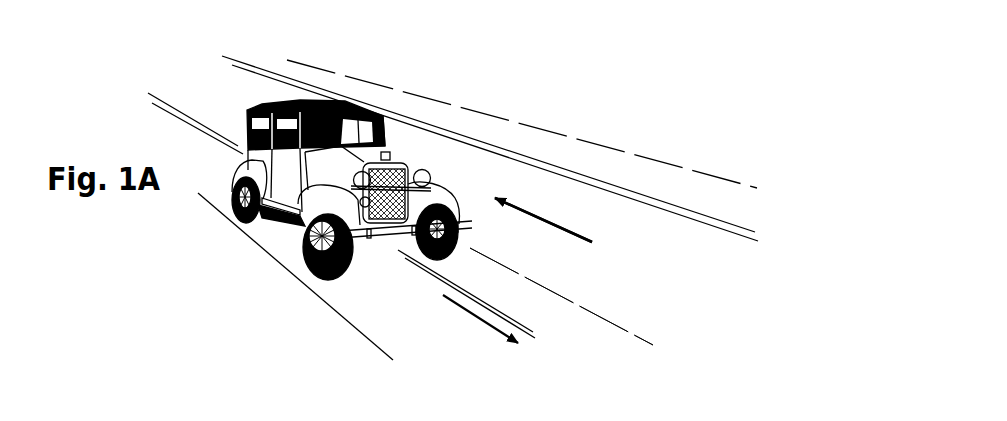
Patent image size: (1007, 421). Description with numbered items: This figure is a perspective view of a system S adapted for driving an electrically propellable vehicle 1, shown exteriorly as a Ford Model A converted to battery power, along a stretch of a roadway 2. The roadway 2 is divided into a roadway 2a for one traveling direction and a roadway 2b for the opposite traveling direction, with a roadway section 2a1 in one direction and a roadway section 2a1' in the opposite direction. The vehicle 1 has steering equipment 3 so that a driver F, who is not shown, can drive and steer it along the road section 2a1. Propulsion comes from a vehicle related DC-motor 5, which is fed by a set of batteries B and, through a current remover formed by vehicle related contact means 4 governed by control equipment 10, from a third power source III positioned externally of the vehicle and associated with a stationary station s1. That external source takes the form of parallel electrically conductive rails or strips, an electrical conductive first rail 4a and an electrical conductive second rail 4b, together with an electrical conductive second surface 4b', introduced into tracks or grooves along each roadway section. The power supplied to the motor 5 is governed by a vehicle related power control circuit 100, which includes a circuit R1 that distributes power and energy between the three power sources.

The vehicle 1 is at (243, 122).
The stretch of a roadway 2 is at (482, 214).
The roadway in one traveling direction 2a is at (476, 311).
The roadway section in one traveling direction 2a1 is at (480, 324).
The roadway section in an opposite direction 2a1' is at (654, 149).
The roadway in an opposite traveling direction 2b is at (283, 80).
The steering equipment 3 is at (388, 133).
The vehicle related contact means 4 is at (373, 245).
The electrical conductive first rail 4a is at (728, 232).
The electrical conductive second rail 4b is at (519, 144).
The electrical conductive second surface 4b' is at (472, 291).
The vehicle related DC-motor 5 is at (397, 155).
The control equipment for contact means 10 is at (263, 227).
The power control circuit 100 is at (403, 240).
The energy distributing and three power sources controlling circuit R1 is at (403, 240).
The battery or set of batteries B is at (292, 225).
The driver F is at (350, 130).
The vehicle and roadways related system S is at (548, 123).
The stationary station s1 is at (522, 323).
The third vehicle external power source III is at (522, 323).